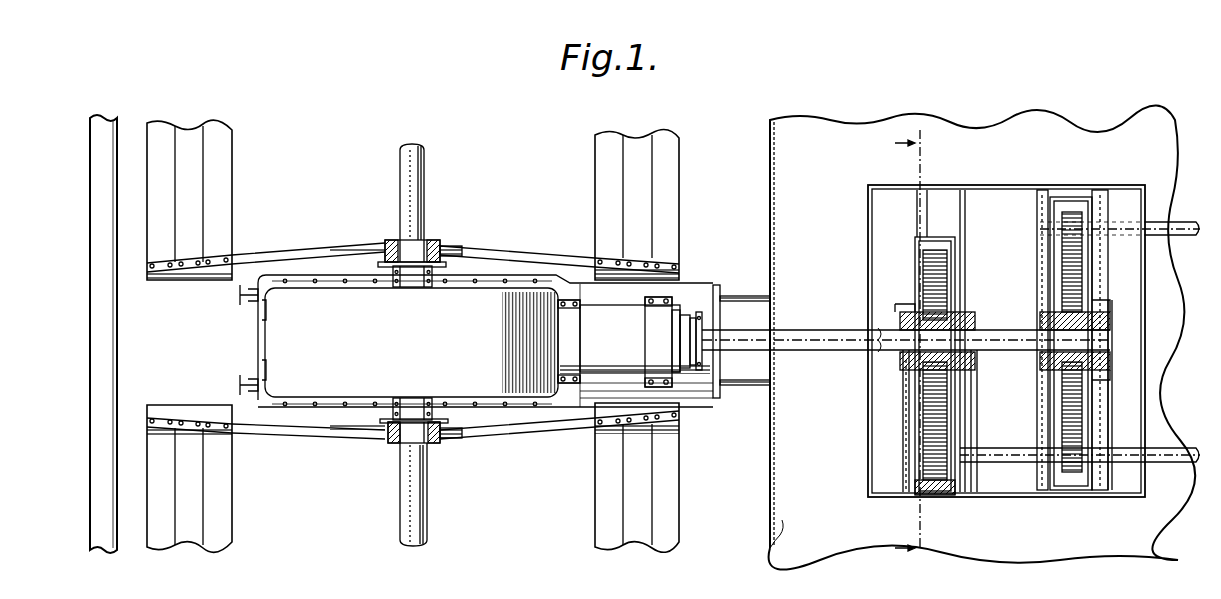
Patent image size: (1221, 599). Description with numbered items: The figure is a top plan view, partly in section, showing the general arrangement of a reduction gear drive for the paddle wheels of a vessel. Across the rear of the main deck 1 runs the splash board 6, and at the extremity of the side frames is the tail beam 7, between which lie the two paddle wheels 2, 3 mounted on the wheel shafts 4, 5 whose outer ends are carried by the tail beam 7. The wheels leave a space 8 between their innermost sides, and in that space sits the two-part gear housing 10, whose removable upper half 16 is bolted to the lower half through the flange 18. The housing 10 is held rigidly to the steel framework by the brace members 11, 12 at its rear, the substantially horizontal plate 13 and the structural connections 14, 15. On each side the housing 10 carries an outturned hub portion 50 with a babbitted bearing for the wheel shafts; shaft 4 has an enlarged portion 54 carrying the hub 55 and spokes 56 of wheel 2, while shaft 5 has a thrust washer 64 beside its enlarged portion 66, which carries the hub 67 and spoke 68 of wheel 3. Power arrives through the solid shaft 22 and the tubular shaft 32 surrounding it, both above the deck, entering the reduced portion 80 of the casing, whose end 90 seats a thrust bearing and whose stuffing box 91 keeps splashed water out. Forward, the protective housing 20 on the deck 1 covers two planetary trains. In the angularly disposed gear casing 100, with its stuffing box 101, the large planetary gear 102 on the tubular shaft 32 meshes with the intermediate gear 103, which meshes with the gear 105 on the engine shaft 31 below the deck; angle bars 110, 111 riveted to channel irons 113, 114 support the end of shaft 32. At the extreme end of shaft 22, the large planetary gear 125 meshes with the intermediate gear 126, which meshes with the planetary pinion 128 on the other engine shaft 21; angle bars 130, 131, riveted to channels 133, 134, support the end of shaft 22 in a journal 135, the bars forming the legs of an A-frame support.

The main deck 1 is at (768, 552).
The paddle wheel 2 is at (226, 190).
The paddle wheel 3 is at (226, 508).
The wheel shaft 4 is at (415, 178).
The wheel shaft 5 is at (425, 505).
The splash board 6 is at (968, 337).
The tail beam 7 is at (90, 165).
The space 8 is at (182, 276).
The gear housing 10 is at (485, 341).
The brace member 11 is at (242, 306).
The brace member 12 is at (242, 375).
The horizontal plate 13 is at (545, 268).
The structural connection 14 is at (740, 296).
The structural connection 15 is at (740, 386).
The upper half 16 is at (298, 410).
The flange 18 is at (320, 275).
The protective housing 20 is at (868, 212).
The engine shaft 21 is at (1182, 222).
The solid shaft 22 is at (800, 330).
The engine shaft 31 is at (1178, 455).
The tubular shaft 32 is at (838, 332).
The outturned hub portion 50 is at (410, 280).
The enlarged portion 54 is at (420, 232).
The hub 55 is at (440, 250).
The spokes 56 is at (470, 250).
The thrust washer 64 is at (470, 436).
The enlarged portion 66 is at (395, 445).
The hub 67 is at (437, 445).
The spoke 68 is at (540, 424).
The reduced portion 80 is at (618, 330).
The end of housing 90 is at (685, 310).
The stuffing box 91 is at (702, 312).
The gear casing 100 is at (955, 252).
The stuffing box 101 is at (900, 316).
The large planetary gear 102 is at (938, 250).
The intermediate gear 103 is at (912, 388).
The gear 105 is at (945, 490).
The angle bar 110 is at (978, 412).
The angle bar 111 is at (905, 426).
The channel iron 113 is at (962, 190).
The channel iron 114 is at (915, 215).
The large planetary gear 125 is at (1075, 475).
The intermediate gear 126 is at (1062, 285).
The planetary pinion 128 is at (1062, 222).
The angle bar 130 is at (1040, 210).
The angle bar 131 is at (1110, 212).
The channel 133 is at (1058, 200).
The channel 134 is at (1108, 480).
The journal 135 is at (1108, 312).